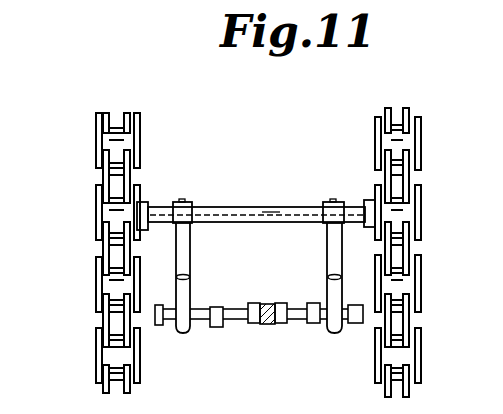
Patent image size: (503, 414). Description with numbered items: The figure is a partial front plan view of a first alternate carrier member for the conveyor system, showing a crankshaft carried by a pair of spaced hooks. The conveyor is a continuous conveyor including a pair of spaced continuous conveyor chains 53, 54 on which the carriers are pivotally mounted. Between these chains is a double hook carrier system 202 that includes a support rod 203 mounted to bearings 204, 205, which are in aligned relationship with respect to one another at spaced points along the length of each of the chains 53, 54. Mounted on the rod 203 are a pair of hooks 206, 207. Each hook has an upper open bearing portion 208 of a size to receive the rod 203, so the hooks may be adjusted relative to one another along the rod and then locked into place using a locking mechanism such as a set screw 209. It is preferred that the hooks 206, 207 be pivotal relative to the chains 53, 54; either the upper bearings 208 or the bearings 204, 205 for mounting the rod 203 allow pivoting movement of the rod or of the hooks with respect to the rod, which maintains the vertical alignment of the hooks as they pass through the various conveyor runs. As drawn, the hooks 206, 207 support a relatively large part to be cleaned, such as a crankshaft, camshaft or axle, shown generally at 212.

The conveyor chain 53 is at (97, 132).
The conveyor chain 54 is at (418, 124).
The double hook carrier system 202 is at (256, 173).
The support rod 203 is at (270, 212).
The bearing 204 is at (142, 212).
The bearing 205 is at (372, 214).
The hook 206 is at (192, 243).
The hook 207 is at (326, 258).
The upper open bearing portion 208 is at (199, 172).
The set screw 209 is at (346, 205).
The part to be cleaned 212 is at (272, 331).